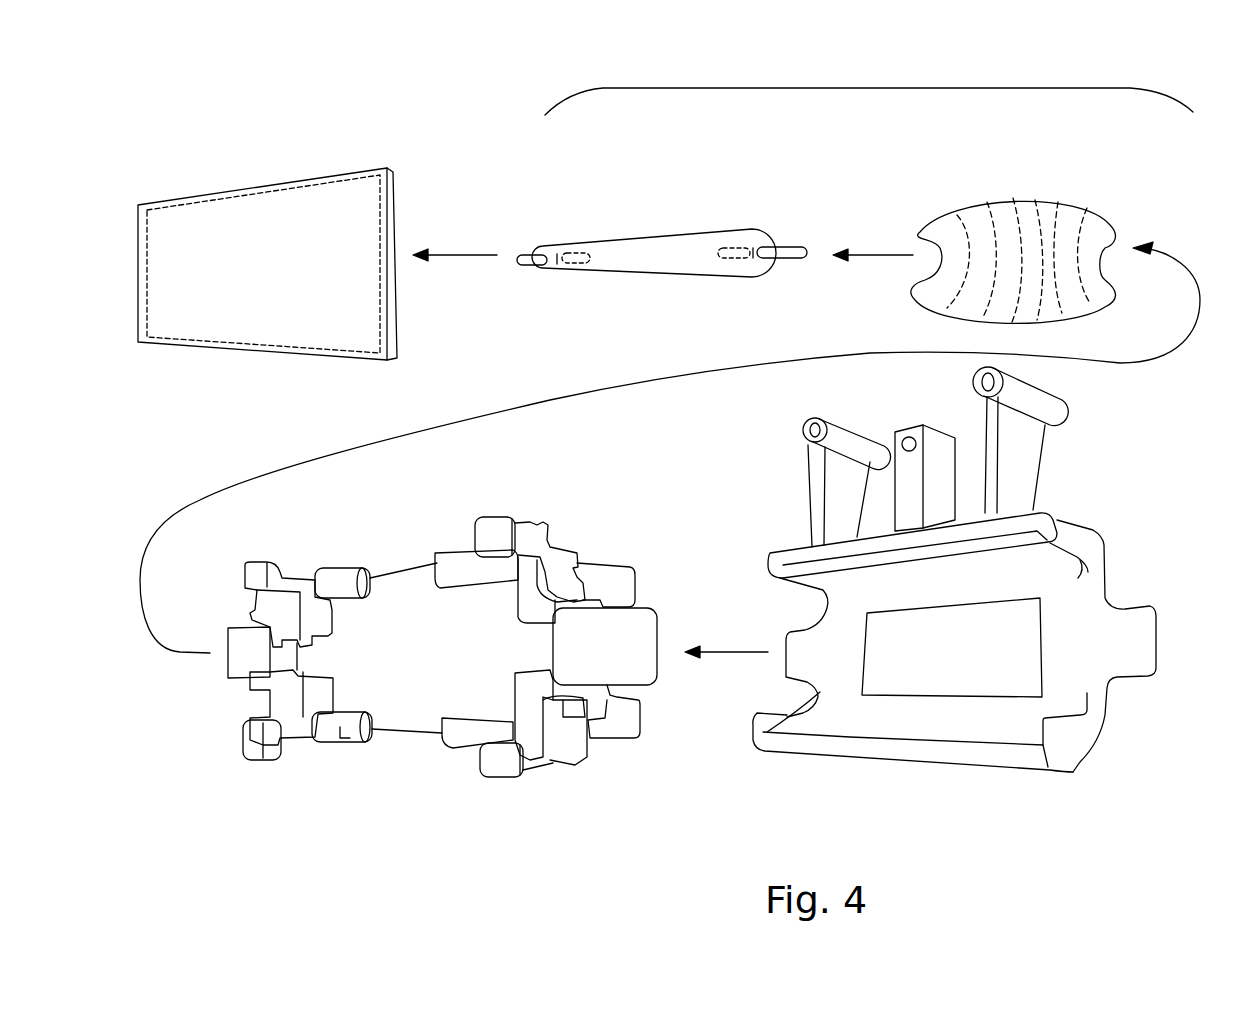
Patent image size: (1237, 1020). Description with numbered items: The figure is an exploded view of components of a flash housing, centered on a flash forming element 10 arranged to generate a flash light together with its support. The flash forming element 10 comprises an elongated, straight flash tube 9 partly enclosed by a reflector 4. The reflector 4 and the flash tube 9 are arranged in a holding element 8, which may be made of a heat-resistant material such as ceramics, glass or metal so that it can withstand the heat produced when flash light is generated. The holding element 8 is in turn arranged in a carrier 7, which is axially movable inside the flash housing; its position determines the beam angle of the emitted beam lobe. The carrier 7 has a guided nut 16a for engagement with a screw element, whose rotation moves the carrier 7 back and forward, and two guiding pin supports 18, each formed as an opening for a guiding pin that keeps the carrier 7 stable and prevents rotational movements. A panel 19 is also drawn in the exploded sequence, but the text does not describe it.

The flash forming element 10 is at (871, 88).
The cover panel 19 is at (222, 192).
The flash tube 9 is at (621, 243).
The reflector 4 is at (946, 208).
The holding element 8 is at (543, 522).
The carrier 7 is at (1073, 530).
The guiding pin support 18 is at (807, 422).
The guided nut 16a is at (908, 428).